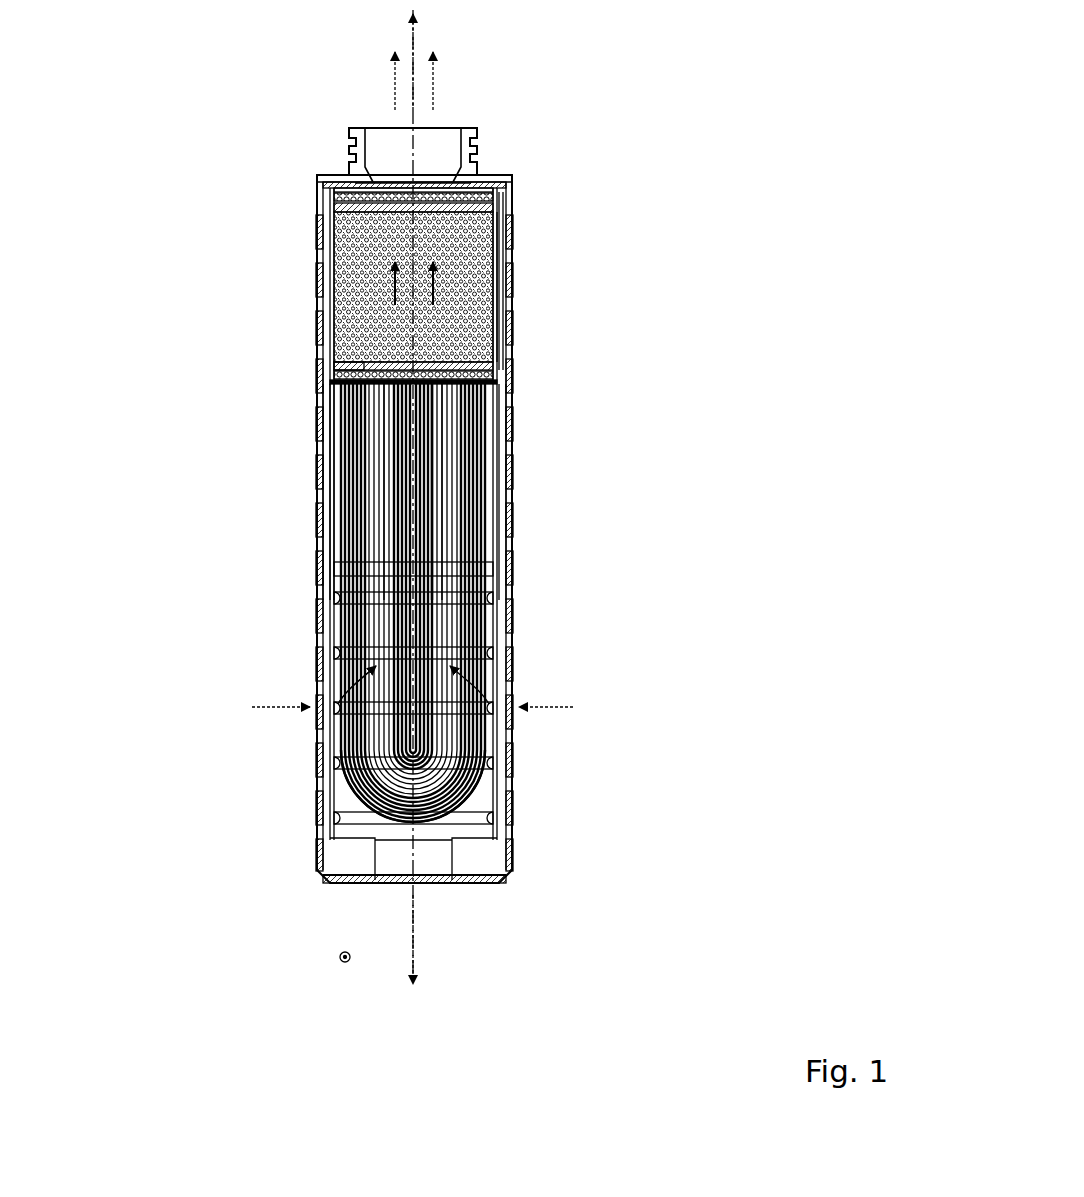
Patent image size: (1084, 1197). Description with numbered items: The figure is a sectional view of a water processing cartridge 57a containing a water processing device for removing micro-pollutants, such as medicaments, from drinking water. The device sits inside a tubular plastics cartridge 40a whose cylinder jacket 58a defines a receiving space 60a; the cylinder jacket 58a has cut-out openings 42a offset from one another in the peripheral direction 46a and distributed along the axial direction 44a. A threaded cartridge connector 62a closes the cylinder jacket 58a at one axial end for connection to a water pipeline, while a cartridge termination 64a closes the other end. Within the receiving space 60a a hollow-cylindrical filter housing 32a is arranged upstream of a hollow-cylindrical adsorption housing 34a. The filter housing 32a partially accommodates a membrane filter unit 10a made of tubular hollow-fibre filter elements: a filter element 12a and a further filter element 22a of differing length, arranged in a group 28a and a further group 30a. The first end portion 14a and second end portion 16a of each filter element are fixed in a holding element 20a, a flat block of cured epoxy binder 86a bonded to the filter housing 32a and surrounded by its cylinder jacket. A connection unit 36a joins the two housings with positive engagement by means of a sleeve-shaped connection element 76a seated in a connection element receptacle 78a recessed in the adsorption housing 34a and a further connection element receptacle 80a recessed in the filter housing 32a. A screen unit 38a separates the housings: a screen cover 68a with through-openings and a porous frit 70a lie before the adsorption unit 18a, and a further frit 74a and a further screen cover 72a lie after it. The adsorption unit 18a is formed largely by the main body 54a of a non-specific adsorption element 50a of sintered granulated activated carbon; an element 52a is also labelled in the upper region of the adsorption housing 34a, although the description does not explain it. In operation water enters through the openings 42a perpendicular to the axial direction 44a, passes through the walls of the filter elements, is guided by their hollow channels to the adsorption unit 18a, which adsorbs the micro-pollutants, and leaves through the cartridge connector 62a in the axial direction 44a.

The filter unit 10a is at (380, 512).
The filter element 12a is at (500, 762).
The first end portion 14a is at (490, 408).
The second end portion 16a is at (318, 425).
The adsorption unit 18a is at (458, 297).
The holding element 20a is at (488, 448).
The further filter element 22a is at (430, 607).
The group of filter elements 28a is at (500, 678).
The further group of further filter elements 30a is at (440, 609).
The filter housing 32a is at (317, 487).
The adsorption housing 34a is at (512, 262).
The connection unit 36a is at (312, 372).
The screen unit 38a is at (220, 237).
The cartridge 40a is at (562, 475).
The openings 42a is at (522, 598).
The axial direction 44a is at (418, 904).
The peripheral direction 46a is at (340, 958).
The non-specific adsorption element 50a is at (360, 198).
The upper plate 52a is at (358, 238).
The main body 54a is at (512, 327).
The water processing cartridge 57a is at (586, 91).
The cylinder jacket 58a is at (512, 520).
The receiving space 60a is at (356, 832).
The cartridge connector 62a is at (500, 179).
The cartridge termination 64a is at (512, 880).
The screen cover 68a is at (510, 385).
The frit 70a is at (512, 370).
The further screen cover 72a is at (510, 201).
The further frit 74a is at (512, 212).
The connection element 76a is at (313, 388).
The connection element receptacle 78a is at (318, 330).
The further connection element receptacle 80a is at (306, 408).
The binder 86a is at (490, 428).